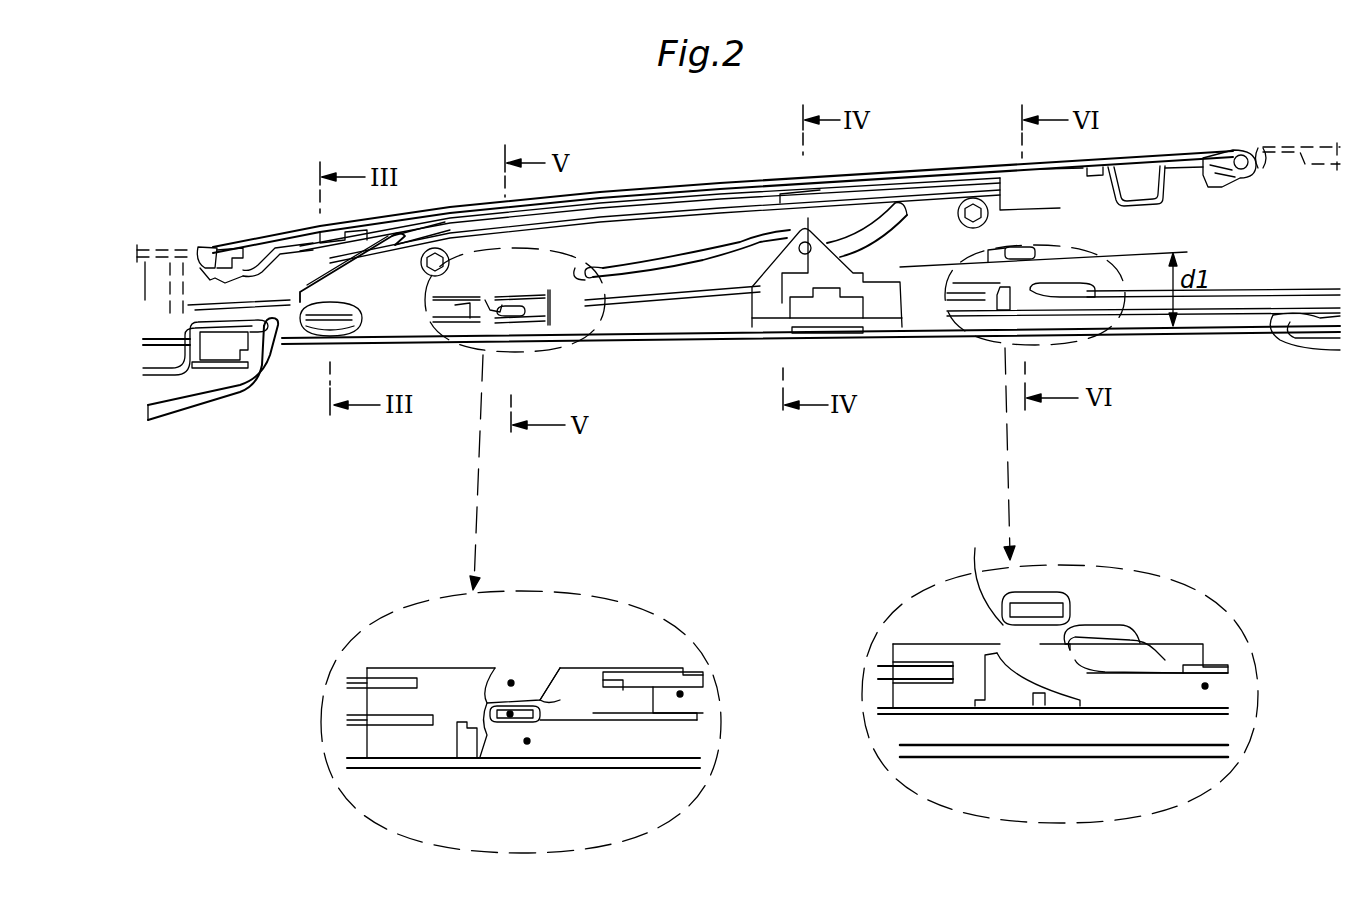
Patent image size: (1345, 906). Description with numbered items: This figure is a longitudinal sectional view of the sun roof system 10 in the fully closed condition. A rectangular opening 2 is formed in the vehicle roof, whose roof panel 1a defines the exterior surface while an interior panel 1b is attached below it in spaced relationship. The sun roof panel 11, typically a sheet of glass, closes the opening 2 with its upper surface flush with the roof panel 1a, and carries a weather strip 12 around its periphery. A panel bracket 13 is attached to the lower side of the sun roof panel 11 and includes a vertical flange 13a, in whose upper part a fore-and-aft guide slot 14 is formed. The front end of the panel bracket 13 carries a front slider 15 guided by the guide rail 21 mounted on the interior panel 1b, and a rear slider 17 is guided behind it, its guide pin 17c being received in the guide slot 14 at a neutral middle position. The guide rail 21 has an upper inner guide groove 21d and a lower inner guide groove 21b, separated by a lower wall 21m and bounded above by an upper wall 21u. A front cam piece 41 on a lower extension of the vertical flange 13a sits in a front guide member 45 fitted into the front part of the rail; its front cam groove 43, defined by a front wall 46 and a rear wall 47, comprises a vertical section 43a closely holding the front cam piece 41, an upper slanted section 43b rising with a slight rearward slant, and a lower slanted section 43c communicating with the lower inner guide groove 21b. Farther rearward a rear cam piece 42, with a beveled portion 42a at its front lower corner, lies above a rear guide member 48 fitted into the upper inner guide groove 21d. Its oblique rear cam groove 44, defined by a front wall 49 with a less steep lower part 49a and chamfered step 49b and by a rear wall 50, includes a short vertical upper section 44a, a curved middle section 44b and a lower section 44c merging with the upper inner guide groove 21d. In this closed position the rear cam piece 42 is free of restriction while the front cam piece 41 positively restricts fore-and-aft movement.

The sun roof system 10 is at (625, 128).
The sun roof panel 11 is at (935, 165).
The weather strip 12 is at (1248, 172).
The panel bracket 13 is at (645, 305).
The vertical flange 13a is at (697, 282).
The guide slot 14 is at (712, 248).
The front slider 15 is at (305, 337).
The rear slider 17 is at (872, 325).
The guide pin 17c is at (800, 245).
The guide rail 21 is at (1152, 338).
The upper wall of upper inner groove 21u is at (705, 675).
The upper inner guide groove 21d is at (683, 694).
The lower inner guide groove 21b is at (660, 746).
The lower wall of upper inner groove 21m is at (700, 720).
The front cam piece 41 is at (505, 320).
The rear cam piece 42 is at (1032, 258).
The beveled portion 42a is at (979, 574).
The front cam groove 43 is at (500, 300).
The vertical section of front cam groove 43a is at (500, 714).
The upper slanted section 43b is at (512, 680).
The lower slanted section 43c is at (527, 745).
The rear cam groove 44 is at (1060, 275).
The upper section of rear cam groove 44a is at (1046, 665).
The curved middle section 44b is at (1096, 694).
The lower section of rear cam groove 44c is at (1178, 699).
The front guide member 45 is at (405, 663).
The front wall of front cam groove 46 is at (487, 686).
The rear wall of front cam groove 47 is at (547, 692).
The rear guide member 48 is at (927, 638).
The front wall of rear cam groove 49 is at (993, 652).
The less steep lower part 49a is at (1039, 697).
The chamfered step 49b is at (1082, 704).
The rear wall of rear cam groove 50 is at (1110, 655).
The roof panel 1a is at (178, 248).
The interior panel 1b is at (207, 410).
The opening 2 is at (205, 245).